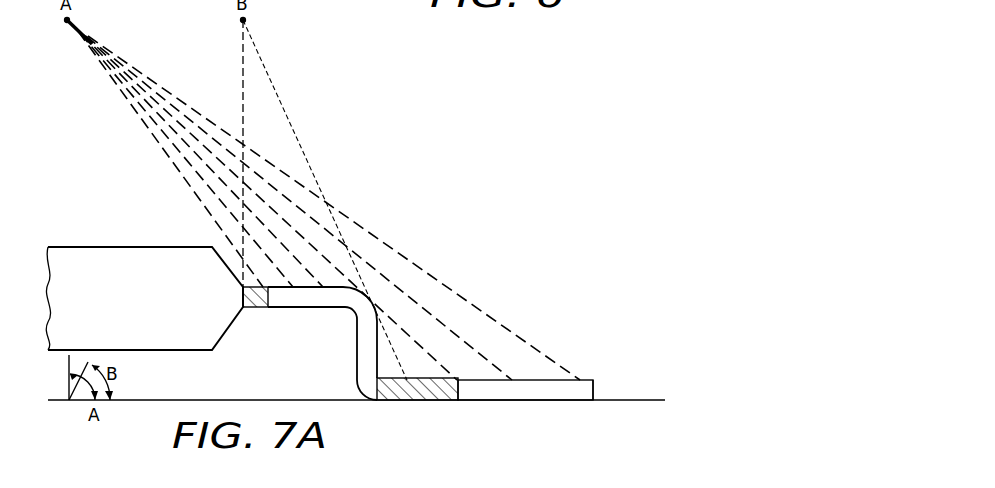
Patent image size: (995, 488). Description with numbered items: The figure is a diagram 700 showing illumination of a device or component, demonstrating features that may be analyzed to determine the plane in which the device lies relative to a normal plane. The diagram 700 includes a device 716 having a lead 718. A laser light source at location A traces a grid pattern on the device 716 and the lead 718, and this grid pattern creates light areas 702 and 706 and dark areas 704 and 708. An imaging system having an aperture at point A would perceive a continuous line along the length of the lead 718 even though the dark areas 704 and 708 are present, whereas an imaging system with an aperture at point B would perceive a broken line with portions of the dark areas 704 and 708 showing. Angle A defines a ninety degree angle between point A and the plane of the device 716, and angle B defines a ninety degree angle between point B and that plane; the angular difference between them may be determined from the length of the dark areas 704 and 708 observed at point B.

The diagram 700 is at (422, 167).
The light area 702 is at (318, 302).
The dark area 704 is at (260, 303).
The light area 706 is at (523, 393).
The dark area 708 is at (420, 393).
The device 716 is at (90, 247).
The lead 718 is at (597, 390).